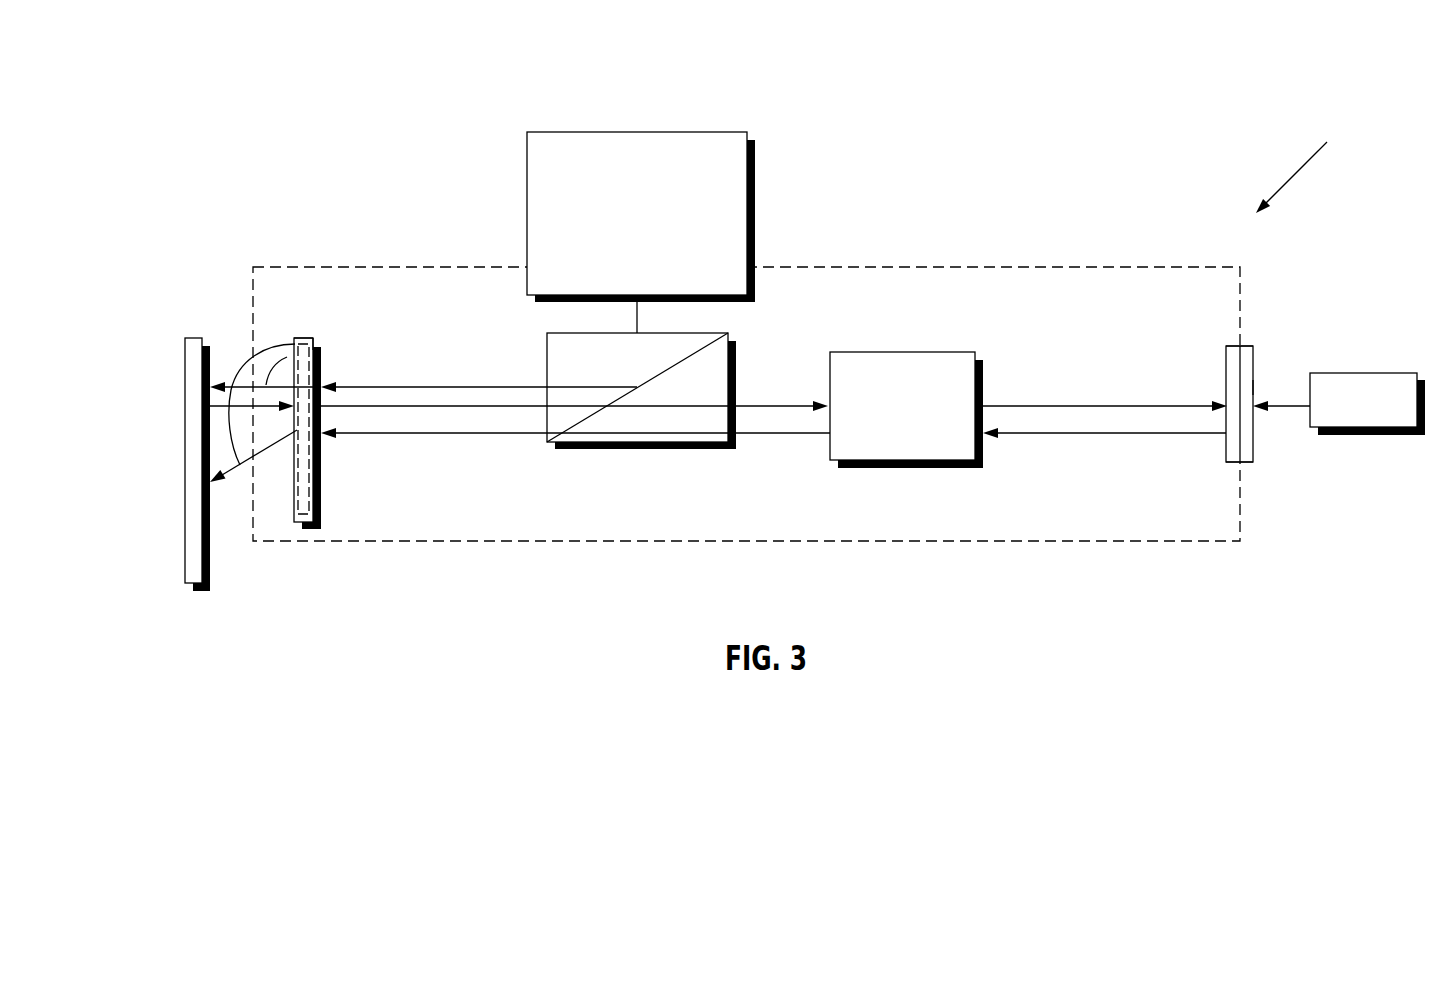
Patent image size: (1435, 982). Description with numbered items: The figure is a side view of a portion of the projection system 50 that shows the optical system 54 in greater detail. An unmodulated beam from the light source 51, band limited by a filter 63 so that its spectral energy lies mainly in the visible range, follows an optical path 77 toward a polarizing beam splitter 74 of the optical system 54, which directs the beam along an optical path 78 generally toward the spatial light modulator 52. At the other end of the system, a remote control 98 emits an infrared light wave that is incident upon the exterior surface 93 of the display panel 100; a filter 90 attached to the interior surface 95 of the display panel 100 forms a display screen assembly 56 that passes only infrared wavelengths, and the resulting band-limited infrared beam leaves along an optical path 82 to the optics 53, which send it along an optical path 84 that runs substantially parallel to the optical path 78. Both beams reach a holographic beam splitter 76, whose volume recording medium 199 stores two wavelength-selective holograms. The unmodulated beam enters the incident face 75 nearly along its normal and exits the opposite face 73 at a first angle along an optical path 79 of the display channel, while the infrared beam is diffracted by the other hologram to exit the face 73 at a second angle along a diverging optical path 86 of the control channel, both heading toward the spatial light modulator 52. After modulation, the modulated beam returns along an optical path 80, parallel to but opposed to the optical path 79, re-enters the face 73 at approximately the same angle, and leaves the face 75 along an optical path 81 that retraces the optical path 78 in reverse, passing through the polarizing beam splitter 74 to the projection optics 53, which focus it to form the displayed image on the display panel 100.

The projection system 50 is at (1307, 164).
The light source 51 is at (665, 132).
The spatial light modulator 52 is at (193, 338).
The optics 53 is at (920, 352).
The optical system 54 is at (993, 269).
The display screen assembly 56 is at (1234, 476).
The filter 63 is at (737, 282).
The opposite face 73 is at (295, 500).
The polarizing beam splitter 74 is at (693, 333).
The incident face 75 is at (323, 505).
The holographic beam splitter 76 is at (296, 340).
The optical path 77 is at (632, 320).
The optical path 78 is at (400, 387).
The optical path 79 is at (228, 386).
The optical path 80 is at (215, 407).
The optical path 81 is at (748, 406).
The optical path 82 is at (1127, 434).
The optical path 84 is at (458, 434).
The optical path 86 is at (240, 465).
The filter 90 is at (1228, 343).
The exterior surface 93 is at (1253, 388).
The interior surface 95 is at (1238, 377).
The remote control 98 is at (1339, 373).
The display panel 100 is at (1245, 345).
The volume recording medium 199 is at (315, 348).